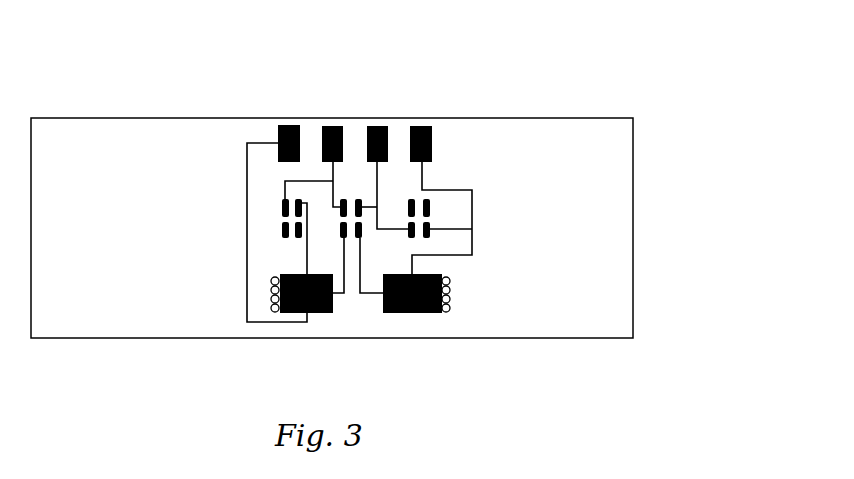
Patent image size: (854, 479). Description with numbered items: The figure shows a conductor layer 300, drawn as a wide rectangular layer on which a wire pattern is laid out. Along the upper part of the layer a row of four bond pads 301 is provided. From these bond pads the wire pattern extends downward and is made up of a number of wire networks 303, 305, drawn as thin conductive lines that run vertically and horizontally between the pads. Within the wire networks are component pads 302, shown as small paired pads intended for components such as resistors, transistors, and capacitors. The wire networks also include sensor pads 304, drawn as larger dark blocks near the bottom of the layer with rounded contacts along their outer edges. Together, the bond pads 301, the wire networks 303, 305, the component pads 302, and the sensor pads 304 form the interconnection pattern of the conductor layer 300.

The conductor layer 300 is at (656, 220).
The bond pads 301 is at (418, 121).
The component pads 302 is at (279, 206).
The wire network 303 is at (246, 225).
The sensor pads 304 is at (382, 308).
The wire network 305 is at (475, 200).